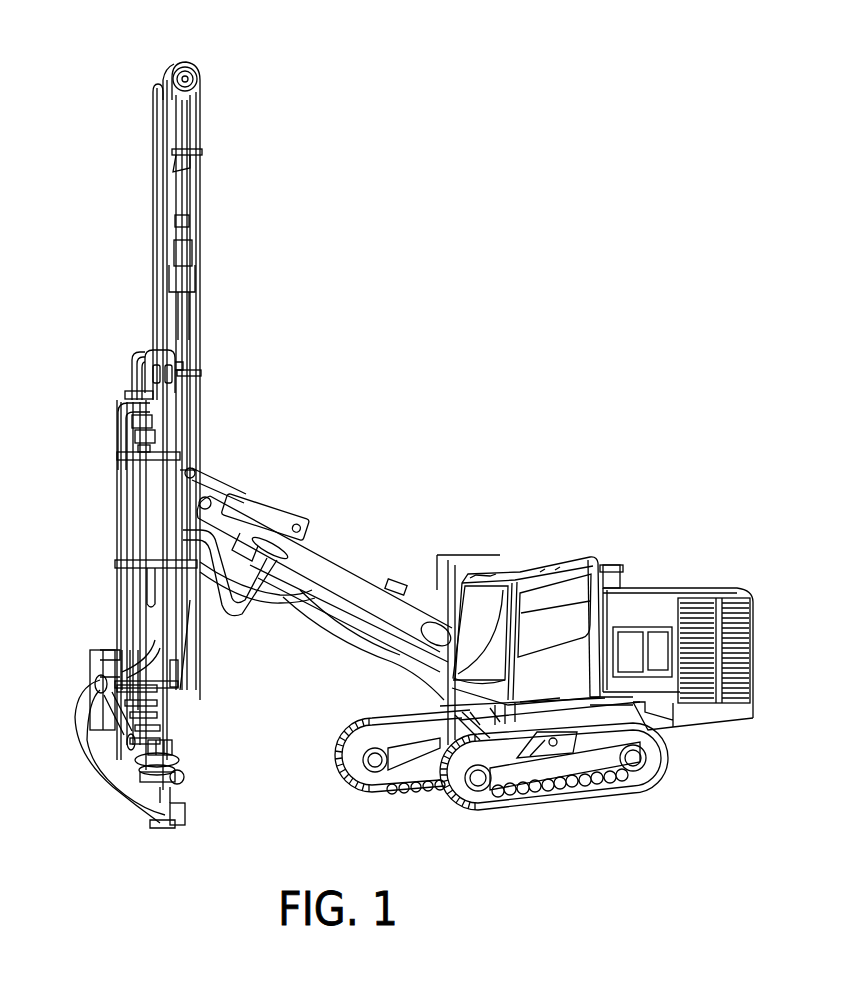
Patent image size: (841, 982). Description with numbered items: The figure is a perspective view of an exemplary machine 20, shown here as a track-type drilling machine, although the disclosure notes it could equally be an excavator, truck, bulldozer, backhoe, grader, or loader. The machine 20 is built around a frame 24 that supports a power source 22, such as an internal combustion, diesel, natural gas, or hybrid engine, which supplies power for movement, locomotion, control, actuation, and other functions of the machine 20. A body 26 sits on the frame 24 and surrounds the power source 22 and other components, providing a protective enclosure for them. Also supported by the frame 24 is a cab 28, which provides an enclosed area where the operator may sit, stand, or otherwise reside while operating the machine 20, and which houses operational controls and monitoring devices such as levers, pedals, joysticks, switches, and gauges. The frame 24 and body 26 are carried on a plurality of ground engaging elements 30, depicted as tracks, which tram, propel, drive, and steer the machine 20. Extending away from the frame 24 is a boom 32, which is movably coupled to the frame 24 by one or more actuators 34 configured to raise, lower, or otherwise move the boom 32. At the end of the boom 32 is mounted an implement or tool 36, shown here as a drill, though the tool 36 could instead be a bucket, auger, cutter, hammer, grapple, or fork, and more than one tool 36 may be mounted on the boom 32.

The machine 20 is at (668, 402).
The power source 22 is at (730, 652).
The frame 24 is at (690, 720).
The body 26 is at (640, 605).
The cab 28 is at (515, 567).
The ground engaging elements 30 is at (132, 772).
The boom 32 is at (350, 560).
The actuators 34 is at (400, 665).
The tool 36 is at (146, 352).